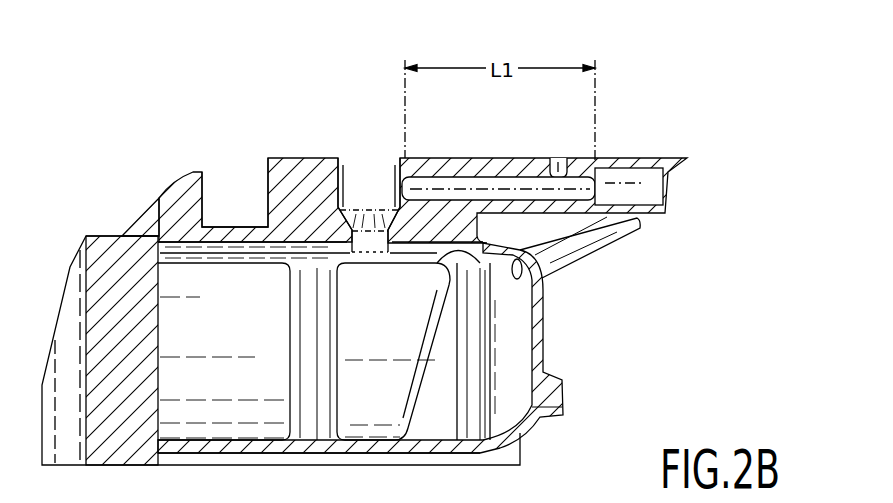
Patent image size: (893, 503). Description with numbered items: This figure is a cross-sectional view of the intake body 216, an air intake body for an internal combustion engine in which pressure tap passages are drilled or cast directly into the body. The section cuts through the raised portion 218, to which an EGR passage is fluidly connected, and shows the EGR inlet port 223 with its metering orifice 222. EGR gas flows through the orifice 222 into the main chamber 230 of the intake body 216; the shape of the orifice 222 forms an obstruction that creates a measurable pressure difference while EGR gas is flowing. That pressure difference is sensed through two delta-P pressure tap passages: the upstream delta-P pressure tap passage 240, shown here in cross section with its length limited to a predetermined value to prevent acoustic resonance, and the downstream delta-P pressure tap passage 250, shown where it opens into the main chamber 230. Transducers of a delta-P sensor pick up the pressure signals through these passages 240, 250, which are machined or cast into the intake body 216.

The intake body 216 is at (83, 176).
The raised portion 218 is at (237, 160).
The metering orifice 222 is at (367, 188).
The EGR inlet port 223 is at (336, 207).
The main chamber 230 is at (258, 315).
The delta-P pressure tap passage 240 is at (590, 168).
The delta-P pressure tap passage 250 is at (523, 267).